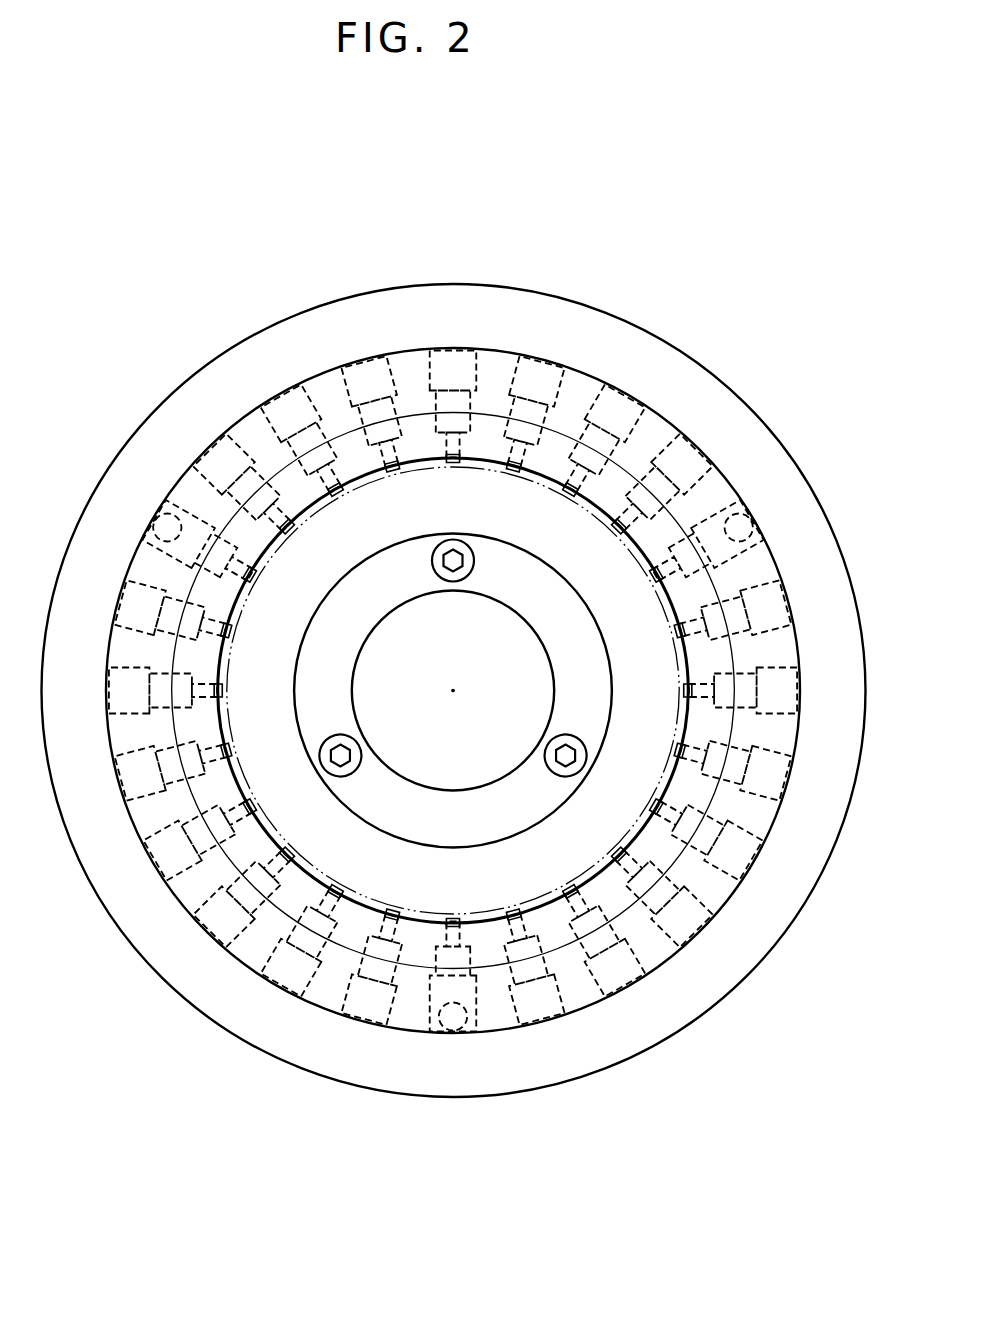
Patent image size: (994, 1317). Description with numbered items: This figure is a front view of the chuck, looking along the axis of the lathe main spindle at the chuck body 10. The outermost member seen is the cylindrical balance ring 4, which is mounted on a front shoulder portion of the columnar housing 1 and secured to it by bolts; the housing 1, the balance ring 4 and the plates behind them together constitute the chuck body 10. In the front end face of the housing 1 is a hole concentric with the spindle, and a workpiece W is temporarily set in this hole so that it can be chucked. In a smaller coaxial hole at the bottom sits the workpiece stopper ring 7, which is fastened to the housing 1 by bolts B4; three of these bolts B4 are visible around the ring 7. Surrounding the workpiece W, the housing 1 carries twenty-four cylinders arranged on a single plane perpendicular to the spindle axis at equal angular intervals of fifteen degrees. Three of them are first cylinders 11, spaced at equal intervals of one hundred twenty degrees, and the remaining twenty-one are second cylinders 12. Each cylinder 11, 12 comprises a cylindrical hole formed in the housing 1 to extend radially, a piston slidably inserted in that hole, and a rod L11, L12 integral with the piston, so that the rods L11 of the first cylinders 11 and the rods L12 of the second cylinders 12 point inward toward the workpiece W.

The housing 1 is at (498, 370).
The balance ring 4 is at (668, 362).
The workpiece stopper ring 7 is at (383, 563).
The chuck body 10 is at (326, 1082).
The first cylinder 11 is at (190, 510).
The second cylinder 12 is at (292, 972).
The bolt B4 is at (546, 750).
The rod L11 is at (255, 585).
The rod L12 is at (687, 688).
The workpiece W is at (562, 915).